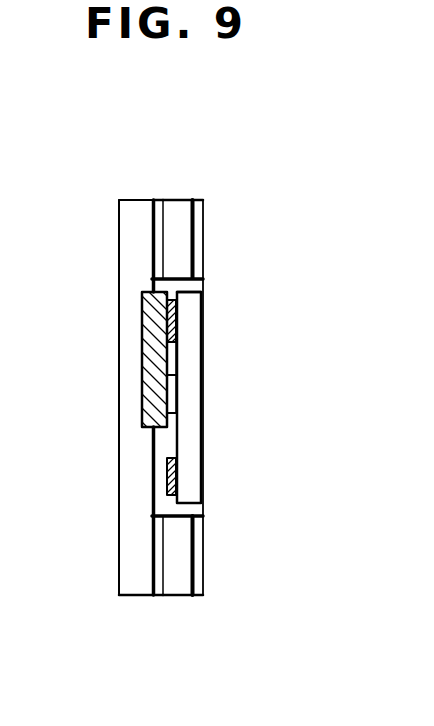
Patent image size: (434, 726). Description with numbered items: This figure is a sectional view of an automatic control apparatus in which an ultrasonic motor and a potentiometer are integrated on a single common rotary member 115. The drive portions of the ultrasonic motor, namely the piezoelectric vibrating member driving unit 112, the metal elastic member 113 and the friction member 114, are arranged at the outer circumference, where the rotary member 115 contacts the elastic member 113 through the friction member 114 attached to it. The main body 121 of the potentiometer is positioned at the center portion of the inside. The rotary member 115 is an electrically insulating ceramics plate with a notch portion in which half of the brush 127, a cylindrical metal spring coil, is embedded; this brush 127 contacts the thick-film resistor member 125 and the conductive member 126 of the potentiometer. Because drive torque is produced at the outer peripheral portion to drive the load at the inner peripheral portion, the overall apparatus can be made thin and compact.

The piezoelectric vibrating member driving unit 112 is at (202, 199).
The metal elastic member 113 is at (175, 199).
The friction member 114 is at (160, 199).
The rotary member 115 is at (126, 199).
The main body of potentiometer 121 is at (192, 298).
The thick-film resistor member 125 is at (172, 318).
The conductive member 126 is at (177, 395).
The brush 127 is at (143, 326).